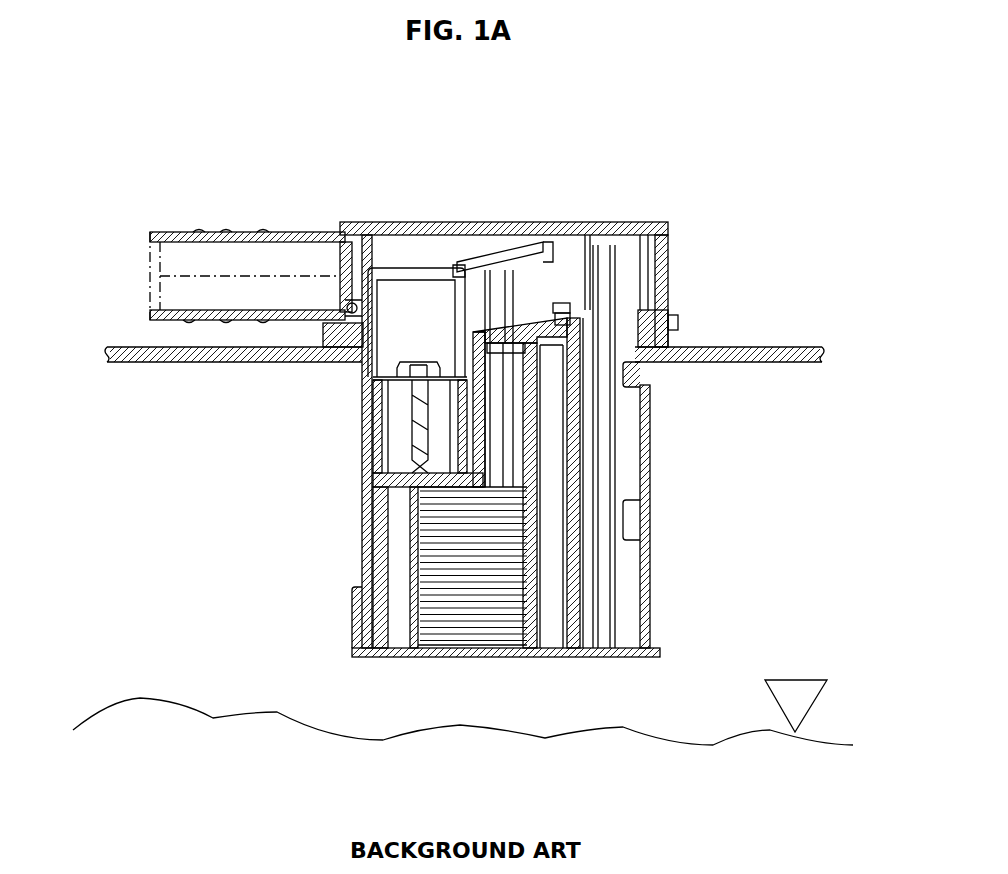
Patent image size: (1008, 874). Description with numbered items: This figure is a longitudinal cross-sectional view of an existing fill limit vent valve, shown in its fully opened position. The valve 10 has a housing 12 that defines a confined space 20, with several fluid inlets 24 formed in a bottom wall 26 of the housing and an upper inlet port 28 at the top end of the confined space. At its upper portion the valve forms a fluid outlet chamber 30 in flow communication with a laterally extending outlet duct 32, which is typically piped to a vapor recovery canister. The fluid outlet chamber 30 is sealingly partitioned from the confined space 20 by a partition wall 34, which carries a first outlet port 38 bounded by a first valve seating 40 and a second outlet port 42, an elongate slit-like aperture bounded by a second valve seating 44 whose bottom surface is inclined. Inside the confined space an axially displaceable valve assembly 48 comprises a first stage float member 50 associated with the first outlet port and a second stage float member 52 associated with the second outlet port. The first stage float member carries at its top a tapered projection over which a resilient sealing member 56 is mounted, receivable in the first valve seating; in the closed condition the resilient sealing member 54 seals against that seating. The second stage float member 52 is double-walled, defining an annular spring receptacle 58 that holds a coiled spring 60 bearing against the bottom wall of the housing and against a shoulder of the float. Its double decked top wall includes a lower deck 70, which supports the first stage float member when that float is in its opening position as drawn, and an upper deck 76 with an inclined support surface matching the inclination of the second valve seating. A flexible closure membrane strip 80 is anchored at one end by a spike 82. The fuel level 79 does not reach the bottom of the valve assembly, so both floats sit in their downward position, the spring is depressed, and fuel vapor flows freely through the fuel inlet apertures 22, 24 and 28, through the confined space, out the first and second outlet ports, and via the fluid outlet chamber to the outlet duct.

The valve 10 is at (185, 153).
The housing 12 is at (643, 403).
The confined space 20 is at (545, 428).
The fuel inlet aperture 22 is at (637, 522).
The fluid inlets 24 is at (470, 660).
The bottom wall 26 is at (407, 652).
The upper inlet port 28 is at (633, 375).
The fluid outlet chamber 30 is at (388, 257).
The outlet duct 32 is at (183, 262).
The partition wall 34 is at (467, 265).
The first outlet port 38 is at (427, 212).
The first valve seating 40 is at (437, 343).
The second outlet port 42 is at (540, 245).
The second valve seating 44 is at (600, 230).
The valve assembly 48 is at (357, 307).
The first stage float member 50 is at (380, 465).
The second stage float member 52 is at (570, 473).
The resilient sealing member 54 is at (377, 437).
The resilient sealing member 56 is at (365, 305).
The annular spring receptacle 58 is at (352, 592).
The coiled spring 60 is at (473, 580).
The lower deck 70 is at (372, 475).
The upper deck 76 is at (480, 328).
The fuel level 79 is at (795, 680).
The flexible closure membrane strip 80 is at (547, 313).
The spike 82 is at (575, 305).